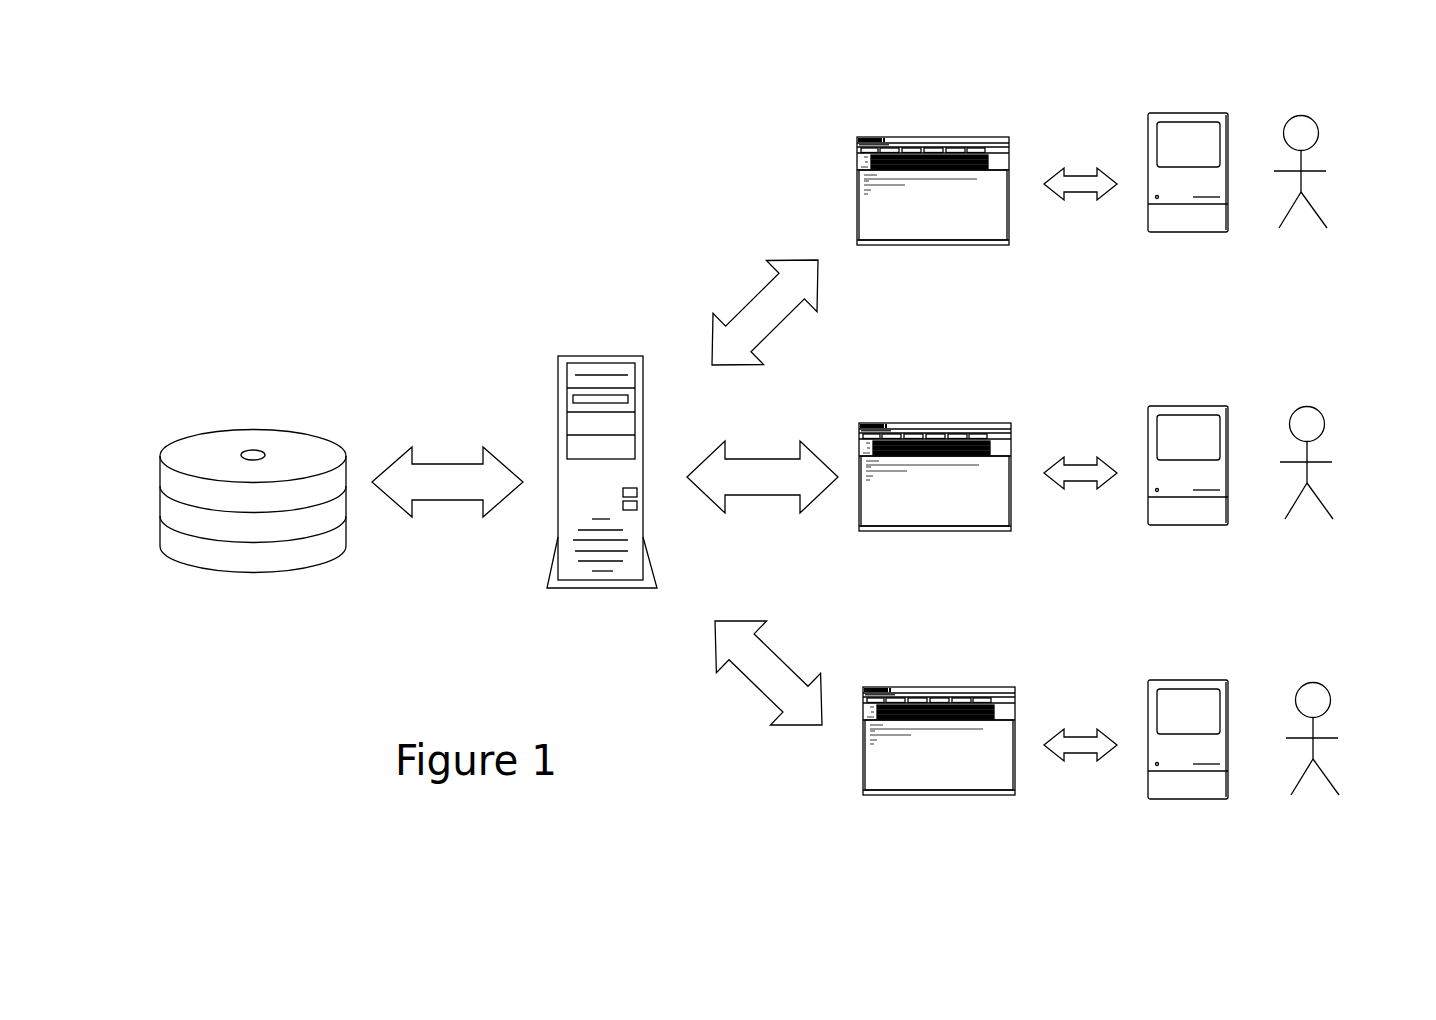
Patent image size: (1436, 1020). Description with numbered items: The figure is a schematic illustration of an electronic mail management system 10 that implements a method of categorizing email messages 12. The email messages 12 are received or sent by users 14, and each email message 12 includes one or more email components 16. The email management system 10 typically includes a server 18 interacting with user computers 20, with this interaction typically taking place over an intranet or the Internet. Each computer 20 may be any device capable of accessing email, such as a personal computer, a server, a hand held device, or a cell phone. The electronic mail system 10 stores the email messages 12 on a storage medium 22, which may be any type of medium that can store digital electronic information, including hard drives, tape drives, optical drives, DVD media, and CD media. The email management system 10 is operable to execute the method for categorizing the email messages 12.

The electronic mail management system 10 is at (275, 315).
The email message 12 is at (950, 137).
The user 14 is at (1315, 120).
The email component 16 is at (848, 168).
The server 18 is at (595, 355).
The user computer 20 is at (1178, 112).
The storage medium 22 is at (203, 552).